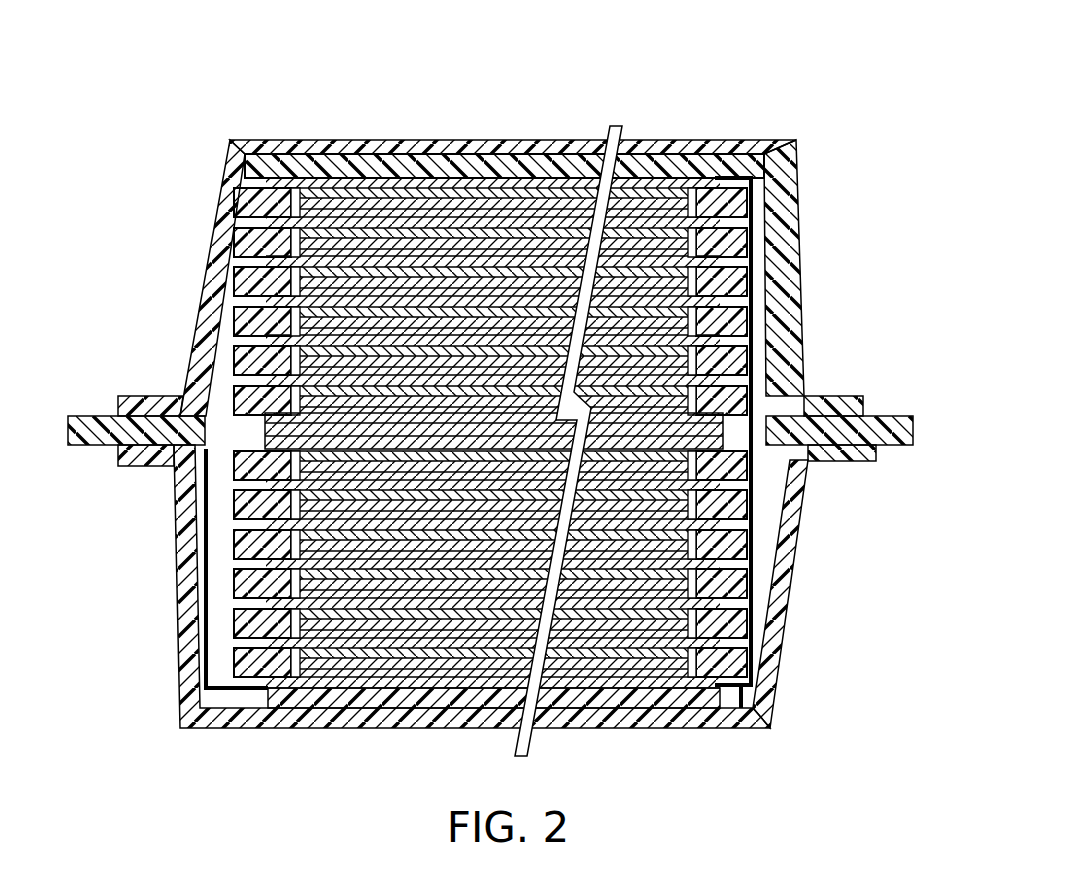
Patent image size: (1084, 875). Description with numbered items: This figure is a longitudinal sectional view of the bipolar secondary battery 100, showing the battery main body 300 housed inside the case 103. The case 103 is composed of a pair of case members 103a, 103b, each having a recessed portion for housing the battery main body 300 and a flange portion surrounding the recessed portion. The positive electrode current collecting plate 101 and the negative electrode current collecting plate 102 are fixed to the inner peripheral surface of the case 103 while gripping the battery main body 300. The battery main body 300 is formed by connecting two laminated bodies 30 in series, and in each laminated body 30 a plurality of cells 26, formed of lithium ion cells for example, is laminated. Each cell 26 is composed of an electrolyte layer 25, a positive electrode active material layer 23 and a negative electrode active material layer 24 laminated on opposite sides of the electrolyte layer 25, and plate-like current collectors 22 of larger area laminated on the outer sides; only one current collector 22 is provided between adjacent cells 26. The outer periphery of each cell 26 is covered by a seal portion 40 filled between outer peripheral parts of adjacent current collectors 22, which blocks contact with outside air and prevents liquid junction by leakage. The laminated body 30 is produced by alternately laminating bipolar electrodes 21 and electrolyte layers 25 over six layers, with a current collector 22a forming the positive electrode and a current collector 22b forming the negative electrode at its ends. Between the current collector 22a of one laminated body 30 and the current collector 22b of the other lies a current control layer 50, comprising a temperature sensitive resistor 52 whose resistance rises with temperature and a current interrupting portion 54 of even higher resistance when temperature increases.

The bipolar secondary battery 100 is at (487, 381).
The positive electrode current collecting plate 101 is at (876, 410).
The negative electrode current collecting plate 102 is at (82, 410).
The case 103 is at (212, 193).
The case member 103a is at (136, 398).
The case member 103b is at (120, 450).
The bipolar electrode 21 is at (417, 80).
The cell 26 is at (683, 80).
The current collector 22 is at (348, 216).
The current collector 22a is at (454, 162).
The current collector 22b is at (302, 413).
The positive electrode active material layer 23 is at (391, 226).
The negative electrode active material layer 24 is at (305, 205).
The electrolyte layer 25 is at (576, 235).
The laminated body 30 is at (760, 264).
The battery main body 300 is at (754, 350).
The seal portion 40 is at (721, 188).
The current control layer 50 is at (399, 618).
The temperature sensitive resistor 52 is at (434, 423).
The current interrupting portion 54 is at (384, 423).